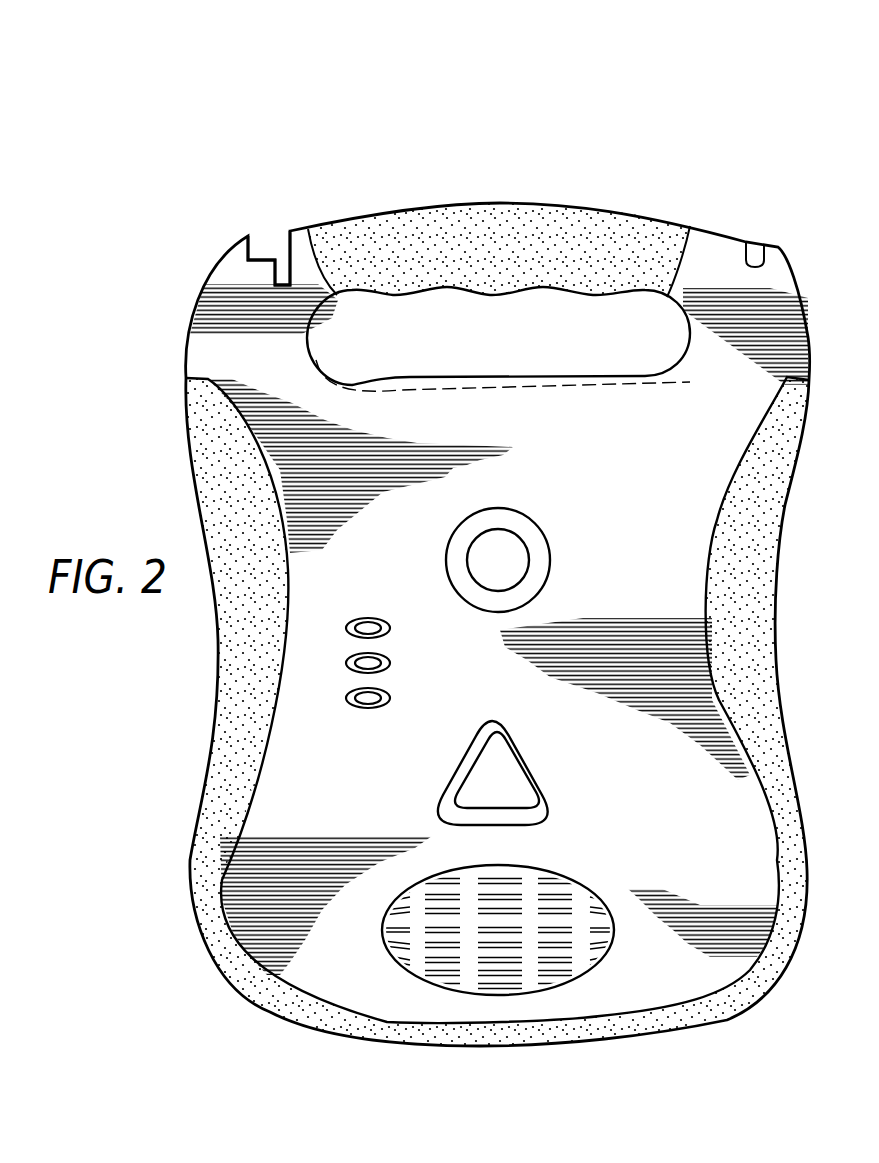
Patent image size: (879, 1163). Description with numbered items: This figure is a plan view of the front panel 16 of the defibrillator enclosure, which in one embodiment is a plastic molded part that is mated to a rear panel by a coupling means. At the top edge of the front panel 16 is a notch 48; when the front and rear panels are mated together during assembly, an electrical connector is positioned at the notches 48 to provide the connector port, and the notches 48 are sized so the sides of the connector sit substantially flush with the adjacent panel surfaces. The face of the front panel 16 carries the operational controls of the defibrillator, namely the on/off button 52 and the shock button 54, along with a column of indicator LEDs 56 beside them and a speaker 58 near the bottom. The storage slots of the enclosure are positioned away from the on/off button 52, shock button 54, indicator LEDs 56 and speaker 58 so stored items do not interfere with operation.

The front panel 16 is at (666, 153).
The notch 48 is at (267, 247).
The on/off button 52 is at (530, 515).
The shock button 54 is at (543, 752).
The indicator LEDs 56 is at (356, 596).
The speaker 58 is at (498, 995).